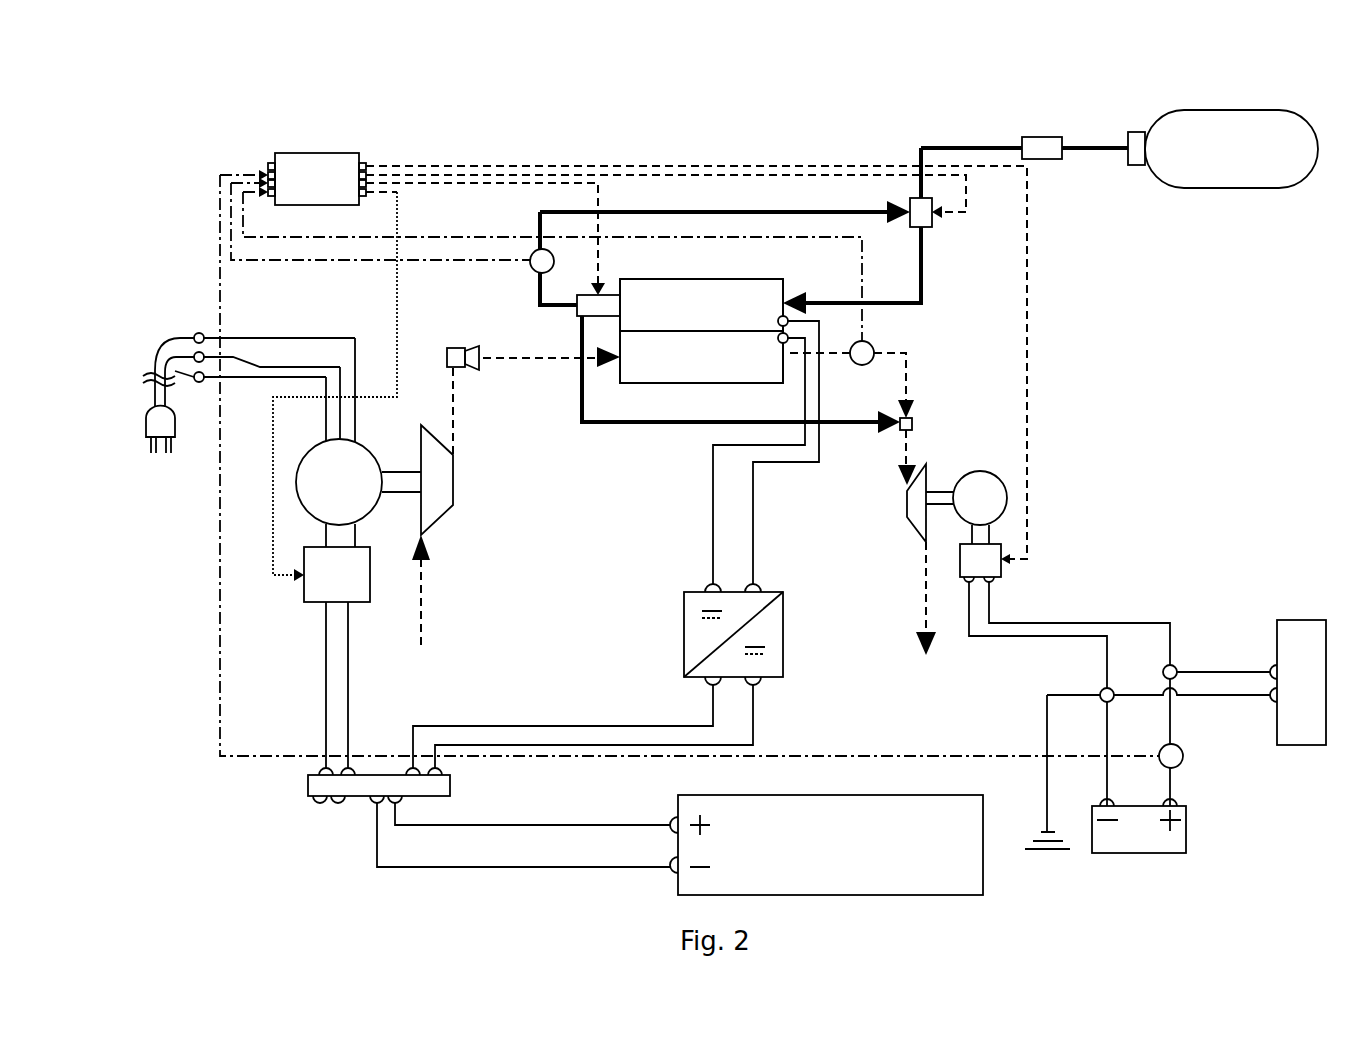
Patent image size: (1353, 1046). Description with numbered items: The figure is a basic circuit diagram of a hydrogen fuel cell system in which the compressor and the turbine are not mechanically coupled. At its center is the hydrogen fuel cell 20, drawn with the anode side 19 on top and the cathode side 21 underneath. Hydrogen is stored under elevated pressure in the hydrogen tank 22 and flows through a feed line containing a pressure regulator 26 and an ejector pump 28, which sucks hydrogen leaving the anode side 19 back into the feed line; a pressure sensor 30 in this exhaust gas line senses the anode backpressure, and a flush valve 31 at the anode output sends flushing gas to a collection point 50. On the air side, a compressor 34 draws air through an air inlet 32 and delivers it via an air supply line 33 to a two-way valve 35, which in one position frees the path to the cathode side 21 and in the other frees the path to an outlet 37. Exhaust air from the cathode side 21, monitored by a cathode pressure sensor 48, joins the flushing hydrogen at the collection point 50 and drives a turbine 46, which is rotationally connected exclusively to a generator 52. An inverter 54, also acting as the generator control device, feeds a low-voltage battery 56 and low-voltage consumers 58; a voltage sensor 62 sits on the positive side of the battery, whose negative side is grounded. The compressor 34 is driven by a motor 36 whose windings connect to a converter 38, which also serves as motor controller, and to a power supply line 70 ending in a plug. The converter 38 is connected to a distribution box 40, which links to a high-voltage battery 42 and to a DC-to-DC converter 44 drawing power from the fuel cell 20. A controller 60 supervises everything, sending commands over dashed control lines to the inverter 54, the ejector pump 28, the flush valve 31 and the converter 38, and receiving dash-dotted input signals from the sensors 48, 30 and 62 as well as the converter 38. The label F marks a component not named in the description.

The anode side 19 is at (717, 300).
The hydrogen fuel cell 20 is at (740, 310).
The cathode side 21 is at (678, 373).
The hydrogen tank 22 is at (1237, 110).
The pressure regulator 26 is at (1043, 136).
The ejector pump 28 is at (940, 221).
The pressure sensor 30 is at (537, 252).
The flush valve 31 is at (584, 300).
The air inlet 32 is at (425, 598).
The air supply line 33 is at (457, 410).
The compressor 34 is at (458, 480).
The valve 35 is at (436, 348).
The motor 36 is at (312, 480).
The outlet 37 is at (457, 340).
The converter 38 is at (312, 587).
The distribution box 40 is at (308, 782).
The high-voltage battery 42 is at (983, 875).
The DC-to-DC converter 44 is at (684, 648).
The turbine 46 is at (905, 500).
The cathode pressure sensor 48 is at (871, 345).
The collection point 50 is at (913, 423).
The generator 52 is at (1007, 498).
The inverter 54 is at (985, 568).
The low-voltage battery 56 is at (1186, 828).
The consumers 58 is at (1297, 620).
The controller 60 is at (322, 153).
The voltage sensor 62 is at (1183, 756).
The power supply line 70 is at (153, 398).
The filter F is at (1140, 166).